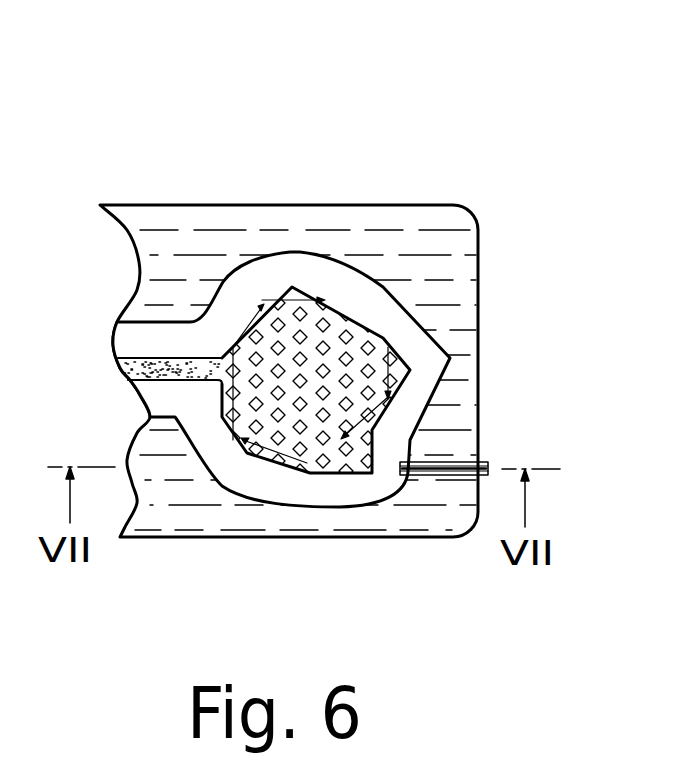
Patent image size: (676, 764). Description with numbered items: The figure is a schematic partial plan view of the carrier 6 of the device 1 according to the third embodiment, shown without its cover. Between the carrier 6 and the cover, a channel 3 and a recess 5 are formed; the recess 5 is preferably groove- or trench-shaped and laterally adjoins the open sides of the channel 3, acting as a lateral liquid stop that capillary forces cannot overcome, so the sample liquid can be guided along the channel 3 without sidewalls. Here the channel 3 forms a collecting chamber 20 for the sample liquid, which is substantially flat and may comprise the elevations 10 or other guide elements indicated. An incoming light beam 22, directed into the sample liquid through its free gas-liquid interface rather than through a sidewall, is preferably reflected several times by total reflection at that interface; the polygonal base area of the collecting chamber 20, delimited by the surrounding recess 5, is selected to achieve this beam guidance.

The device 1 is at (318, 312).
The channel 3 is at (158, 367).
The recess 5 is at (340, 287).
The carrier 6 is at (452, 288).
The elevations 10 is at (296, 464).
The collecting chamber 20 is at (332, 403).
The incoming light beam 22 is at (378, 467).